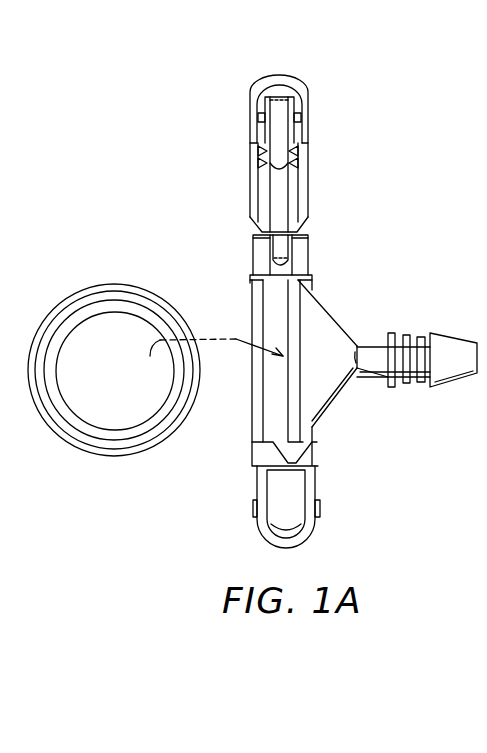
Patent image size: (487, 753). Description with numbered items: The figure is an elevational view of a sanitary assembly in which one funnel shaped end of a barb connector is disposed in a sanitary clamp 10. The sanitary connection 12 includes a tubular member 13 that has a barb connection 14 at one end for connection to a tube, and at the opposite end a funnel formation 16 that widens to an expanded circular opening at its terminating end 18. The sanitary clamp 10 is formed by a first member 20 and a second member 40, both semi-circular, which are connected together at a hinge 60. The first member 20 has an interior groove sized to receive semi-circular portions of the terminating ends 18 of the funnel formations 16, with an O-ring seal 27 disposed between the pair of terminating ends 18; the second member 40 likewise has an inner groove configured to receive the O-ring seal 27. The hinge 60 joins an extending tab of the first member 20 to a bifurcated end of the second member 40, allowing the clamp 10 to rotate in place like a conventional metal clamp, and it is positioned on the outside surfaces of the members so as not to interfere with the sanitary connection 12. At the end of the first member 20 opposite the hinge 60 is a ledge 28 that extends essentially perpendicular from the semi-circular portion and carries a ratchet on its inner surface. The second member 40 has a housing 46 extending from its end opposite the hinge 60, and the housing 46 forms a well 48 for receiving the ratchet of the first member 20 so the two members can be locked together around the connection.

The sanitary clamp 10 is at (336, 129).
The sanitary connection 12 is at (396, 332).
The tubular member 13 is at (371, 380).
The barb connection 14 is at (446, 332).
The funnel formation 16 is at (324, 298).
The terminating end 18 is at (283, 396).
The first member 20 is at (252, 140).
The O-ring seal 27 is at (112, 282).
The ledge 28 is at (271, 77).
The second member 40 is at (315, 482).
The housing 46 is at (256, 527).
The well 48 is at (297, 508).
The hinge 60 is at (252, 255).